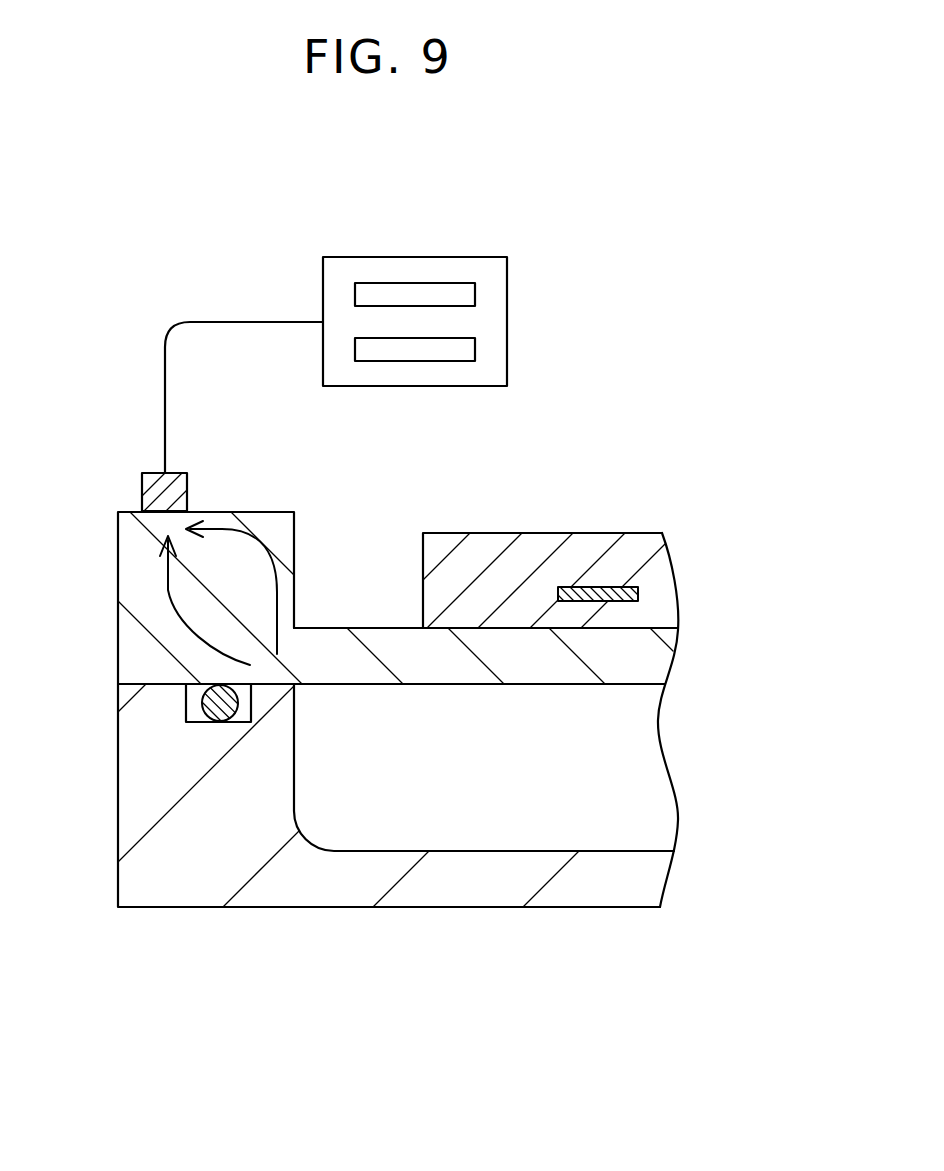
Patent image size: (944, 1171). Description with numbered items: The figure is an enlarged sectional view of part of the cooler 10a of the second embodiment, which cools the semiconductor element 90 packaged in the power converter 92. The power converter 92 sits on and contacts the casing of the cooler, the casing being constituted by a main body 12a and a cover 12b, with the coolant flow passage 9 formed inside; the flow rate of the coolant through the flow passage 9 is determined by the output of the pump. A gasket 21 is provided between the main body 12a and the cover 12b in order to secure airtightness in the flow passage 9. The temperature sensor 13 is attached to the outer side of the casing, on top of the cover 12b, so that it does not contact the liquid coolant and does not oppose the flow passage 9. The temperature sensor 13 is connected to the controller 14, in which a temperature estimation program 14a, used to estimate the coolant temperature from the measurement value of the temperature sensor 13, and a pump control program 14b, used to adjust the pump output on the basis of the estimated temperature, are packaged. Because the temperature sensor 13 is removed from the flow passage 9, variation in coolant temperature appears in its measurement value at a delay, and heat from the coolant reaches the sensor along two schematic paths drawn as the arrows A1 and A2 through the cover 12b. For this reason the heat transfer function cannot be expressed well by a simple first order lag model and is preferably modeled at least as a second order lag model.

The cooler 10a is at (96, 314).
The controller 14 is at (507, 270).
The temperature estimation program 14a is at (387, 283).
The pump control program 14b is at (367, 361).
The temperature sensor 13 is at (187, 483).
The cover 12b is at (118, 555).
The main body 12a is at (167, 894).
The flow passage 9 is at (489, 818).
The power converter 92 is at (445, 533).
The semiconductor element 90 is at (638, 593).
The gasket 21 is at (186, 710).
The arrow A1 is at (280, 588).
The arrow A2 is at (180, 620).